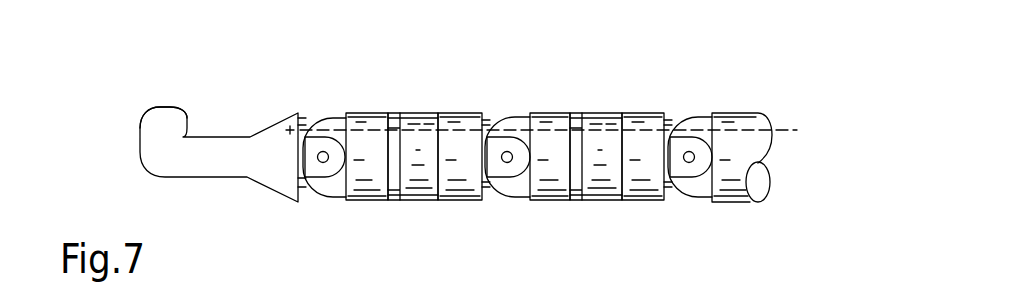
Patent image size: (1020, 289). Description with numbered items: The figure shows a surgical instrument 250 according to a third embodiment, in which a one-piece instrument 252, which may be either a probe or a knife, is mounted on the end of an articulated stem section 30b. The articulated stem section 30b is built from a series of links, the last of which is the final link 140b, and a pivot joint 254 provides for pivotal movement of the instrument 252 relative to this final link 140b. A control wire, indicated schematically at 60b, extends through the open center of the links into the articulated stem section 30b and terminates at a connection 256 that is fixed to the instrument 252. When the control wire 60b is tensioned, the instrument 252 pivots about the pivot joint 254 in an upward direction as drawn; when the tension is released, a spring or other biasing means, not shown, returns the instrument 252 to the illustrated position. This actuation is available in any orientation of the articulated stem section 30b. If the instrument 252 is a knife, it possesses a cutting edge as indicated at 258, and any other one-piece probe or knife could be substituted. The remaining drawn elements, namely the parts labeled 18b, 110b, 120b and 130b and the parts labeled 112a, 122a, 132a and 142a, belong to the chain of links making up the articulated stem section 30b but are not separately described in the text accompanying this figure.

The end link 18b is at (732, 112).
The articulated stem section 30b is at (617, 53).
The control wire 60b is at (784, 130).
The link 110b is at (630, 112).
The pivot pin 112a is at (691, 161).
The link 120b is at (547, 112).
The pivot coupling 122a is at (597, 203).
The link 130b is at (463, 113).
The pivot pin 132a is at (509, 161).
The final link 140b is at (373, 112).
The pivot coupling 142a is at (417, 203).
The surgical instrument 250 is at (434, 62).
The one-piece instrument 252 is at (213, 178).
The pivot joint 254 is at (325, 151).
The connection 256 is at (290, 128).
The cutting edge 258 is at (160, 105).